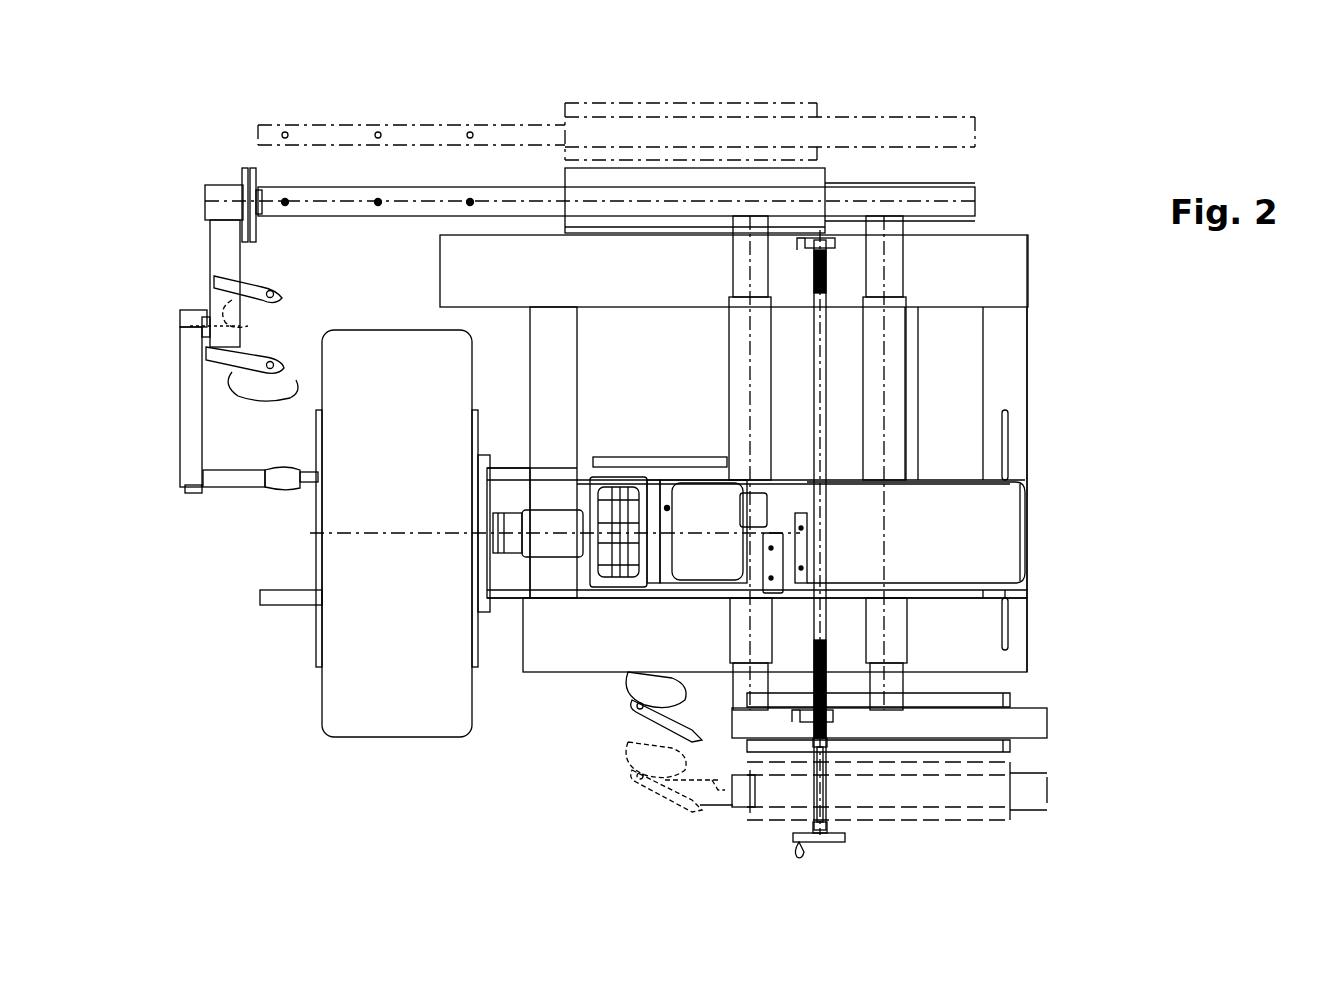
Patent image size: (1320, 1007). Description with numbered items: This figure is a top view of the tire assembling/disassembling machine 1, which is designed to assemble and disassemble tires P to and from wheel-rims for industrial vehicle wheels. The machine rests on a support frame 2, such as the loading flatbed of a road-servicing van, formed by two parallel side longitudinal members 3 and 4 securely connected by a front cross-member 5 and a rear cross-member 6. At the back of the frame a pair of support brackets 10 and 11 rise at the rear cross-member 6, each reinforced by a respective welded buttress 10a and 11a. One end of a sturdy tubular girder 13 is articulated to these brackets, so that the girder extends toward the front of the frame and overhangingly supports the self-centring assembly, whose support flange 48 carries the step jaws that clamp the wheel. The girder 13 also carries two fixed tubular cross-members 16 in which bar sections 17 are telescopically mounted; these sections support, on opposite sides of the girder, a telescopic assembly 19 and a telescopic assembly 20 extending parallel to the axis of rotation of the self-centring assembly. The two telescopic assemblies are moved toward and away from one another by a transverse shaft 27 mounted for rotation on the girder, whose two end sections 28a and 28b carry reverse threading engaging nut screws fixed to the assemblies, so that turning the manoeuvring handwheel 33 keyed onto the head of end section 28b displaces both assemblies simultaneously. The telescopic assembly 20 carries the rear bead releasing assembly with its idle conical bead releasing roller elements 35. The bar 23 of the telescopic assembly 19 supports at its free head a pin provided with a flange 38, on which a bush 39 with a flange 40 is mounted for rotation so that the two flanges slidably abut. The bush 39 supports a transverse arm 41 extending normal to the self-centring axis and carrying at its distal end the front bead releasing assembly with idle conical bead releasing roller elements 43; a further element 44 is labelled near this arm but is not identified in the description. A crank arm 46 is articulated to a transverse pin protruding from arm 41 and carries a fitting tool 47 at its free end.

The tire assembling/disassembling machine 1 is at (1135, 393).
The support frame 2 is at (1037, 294).
The side longitudinal member 3 is at (440, 276).
The side longitudinal member 4 is at (1025, 665).
The front cross-member 5 is at (530, 356).
The rear cross-member 6 is at (985, 337).
The support bracket 10 is at (1025, 472).
The buttress 10a is at (1008, 440).
The support bracket 11 is at (1030, 594).
The buttress 11a is at (1008, 632).
The tubular girder 13 is at (1008, 541).
The tubular cross-member 16 is at (729, 324).
The bar section 17 is at (733, 266).
The telescopic assembly 19 is at (945, 108).
The telescopic assembly 20 is at (1056, 788).
The bar 23 is at (333, 199).
The transverse shaft 27 is at (828, 388).
The threaded end section 28a is at (822, 272).
The threaded end section 28b is at (830, 680).
The manoeuvring handwheel 33 is at (836, 842).
The bead releasing roller element 35 is at (637, 695).
The flange 38 is at (258, 180).
The bush 39 is at (218, 190).
The flange 40 is at (242, 178).
The transverse arm 41 is at (212, 250).
The bead releasing roller element 43 is at (266, 393).
The upper lever 44 is at (278, 358).
The crank arm 46 is at (182, 420).
The fitting tool 47 is at (292, 486).
The support flange 48 is at (492, 620).
The tire P is at (383, 735).